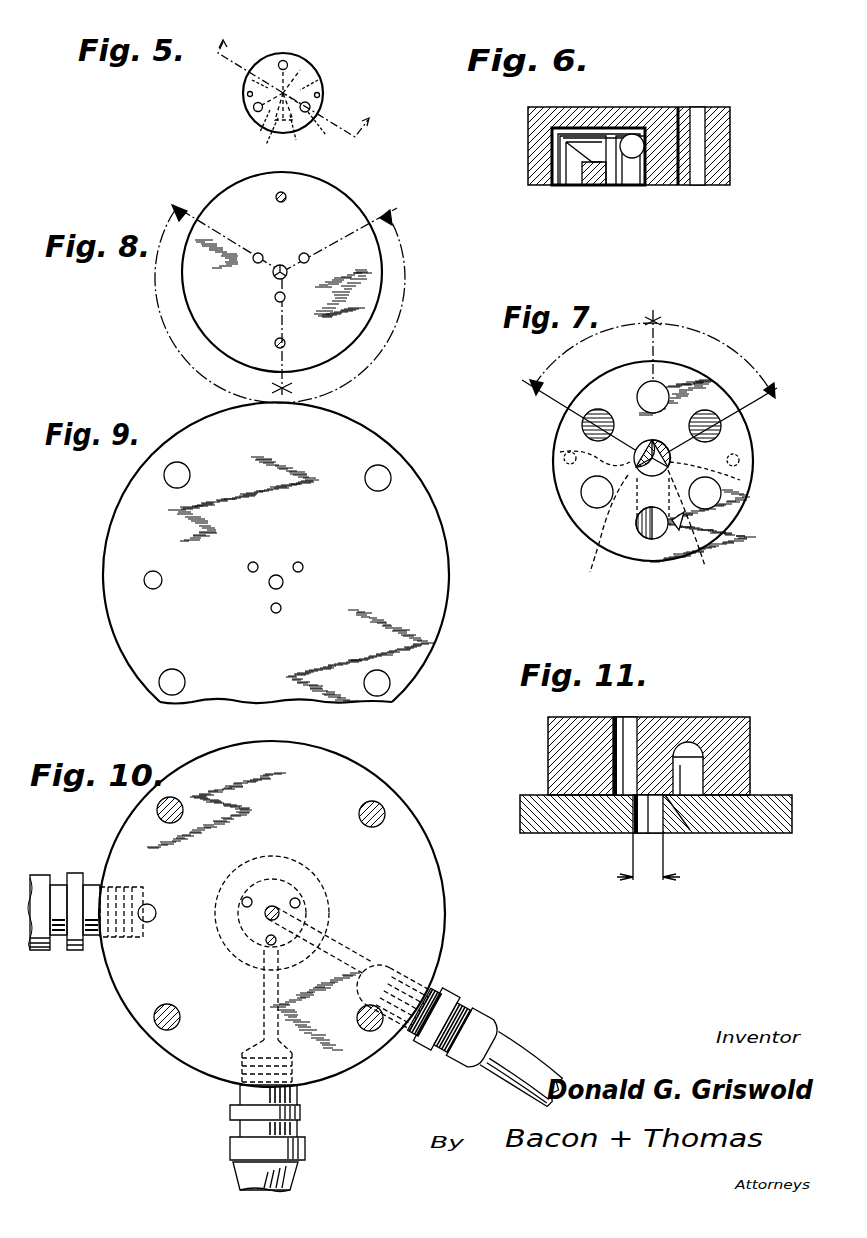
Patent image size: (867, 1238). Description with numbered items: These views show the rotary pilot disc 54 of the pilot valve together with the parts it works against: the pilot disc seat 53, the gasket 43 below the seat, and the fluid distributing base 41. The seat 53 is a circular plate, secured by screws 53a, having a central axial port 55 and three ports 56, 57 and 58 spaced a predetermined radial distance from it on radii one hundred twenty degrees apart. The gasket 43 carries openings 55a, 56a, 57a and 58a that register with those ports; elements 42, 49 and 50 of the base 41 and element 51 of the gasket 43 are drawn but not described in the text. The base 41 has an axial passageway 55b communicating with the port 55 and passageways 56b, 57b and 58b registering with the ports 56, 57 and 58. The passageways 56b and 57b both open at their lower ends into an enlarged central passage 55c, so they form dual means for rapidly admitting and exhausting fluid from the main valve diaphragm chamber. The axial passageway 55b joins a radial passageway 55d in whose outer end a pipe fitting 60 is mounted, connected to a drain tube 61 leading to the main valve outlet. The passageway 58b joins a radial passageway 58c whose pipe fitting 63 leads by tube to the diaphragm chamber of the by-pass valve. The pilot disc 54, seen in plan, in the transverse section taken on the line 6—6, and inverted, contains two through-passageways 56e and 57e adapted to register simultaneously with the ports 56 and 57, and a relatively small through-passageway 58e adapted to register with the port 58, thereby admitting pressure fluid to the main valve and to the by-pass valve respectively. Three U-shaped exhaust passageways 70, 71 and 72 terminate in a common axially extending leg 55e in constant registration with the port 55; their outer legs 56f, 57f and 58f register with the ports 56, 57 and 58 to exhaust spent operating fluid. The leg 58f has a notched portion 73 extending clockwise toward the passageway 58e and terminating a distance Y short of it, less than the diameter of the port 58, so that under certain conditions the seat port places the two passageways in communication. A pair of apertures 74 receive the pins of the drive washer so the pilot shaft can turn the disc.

In FIG. 5, the line 6— 6 is at (298, 79).
In FIG. 10, the base member 41 is at (424, 880).
In FIG. 10, the bolt holes 42 is at (384, 804).
In FIG. 9, the gasket 43 is at (430, 532).
In FIG. 10, the pipe fitting 49 is at (76, 873).
In FIG. 10, the passage 50 is at (151, 905).
In FIG. 9, the hole 51 is at (153, 571).
In FIG. 8, the pilot disc seat 53 is at (348, 208).
In FIG. 11, the pilot disc seat 53 is at (778, 833).
In FIG. 8, the screws 53a is at (287, 197).
In FIG. 5, the pilot disc 54 is at (306, 57).
In FIG. 6, the pilot disc 54 is at (528, 130).
In FIG. 7, the pilot disc 54 is at (720, 540).
In FIG. 11, the pilot disc 54 is at (548, 745).
In FIG. 8, the central port 55 is at (274, 278).
In FIG. 9, the gasket opening 55a is at (269, 585).
In FIG. 10, the axial passageway 55b is at (265, 917).
In FIG. 10, the enlarged central passage 55c is at (282, 880).
In FIG. 10, the radial passageway 55d is at (363, 958).
In FIG. 5, the common axial leg portion 55e is at (251, 126).
In FIG. 6, the common axial leg portion 55e is at (630, 180).
In FIG. 7, the common axial leg portion 55e is at (740, 480).
In FIG. 8, the port 56 is at (259, 253).
In FIG. 9, the gasket opening 56a is at (255, 562).
In FIG. 10, the passageway 56b is at (247, 896).
In FIG. 5, the pressure through-passageway 56e is at (287, 60).
In FIG. 7, the pressure through-passageway 56e is at (660, 385).
In FIG. 5, the outer leg portion 56f is at (252, 80).
In FIG. 6, the outer leg portion 56f is at (566, 185).
In FIG. 7, the outer leg portion 56f is at (715, 430).
In FIG. 8, the port 57 is at (306, 253).
In FIG. 9, the gasket opening 57a is at (300, 562).
In FIG. 10, the passageway 57b is at (300, 900).
In FIG. 5, the pressure through-passageway 57e is at (311, 107).
In FIG. 6, the pressure through-passageway 57e is at (698, 114).
In FIG. 7, the pressure through-passageway 57e is at (592, 498).
In FIG. 5, the outer leg portion 57f is at (318, 80).
In FIG. 6, the outer leg portion 57f is at (668, 183).
In FIG. 7, the outer leg portion 57f is at (590, 428).
In FIG. 8, the port 58 is at (286, 298).
In FIG. 11, the port 58 is at (641, 838).
In FIG. 9, the gasket opening 58a is at (282, 608).
In FIG. 10, the passageway 58b is at (278, 942).
In FIG. 10, the radial passageway 58c is at (262, 1020).
In FIG. 5, the small pressure through-passageway 58e is at (254, 108).
In FIG. 7, the small pressure through-passageway 58e is at (712, 496).
In FIG. 11, the small pressure through-passageway 58e is at (625, 730).
In FIG. 5, the outer leg 58f is at (296, 135).
In FIG. 7, the outer leg 58f is at (652, 540).
In FIG. 11, the outer leg 58f is at (696, 782).
In FIG. 10, the pipe fitting 60 is at (453, 986).
In FIG. 10, the drain tube 61 is at (546, 1072).
In FIG. 10, the pipe fitting 63 is at (232, 1112).
In FIG. 5, the U-shaped exhaust passageway 70 is at (272, 70).
In FIG. 6, the U-shaped exhaust passageway 70 is at (604, 118).
In FIG. 7, the U-shaped exhaust passageway 70 is at (740, 452).
In FIG. 5, the U-shaped exhaust passageway 71 is at (305, 73).
In FIG. 6, the U-shaped exhaust passageway 71 is at (638, 133).
In FIG. 7, the U-shaped exhaust passageway 71 is at (560, 452).
In FIG. 5, the U-shaped exhaust passageway 72 is at (322, 130).
In FIG. 7, the U-shaped exhaust passageway 72 is at (604, 529).
In FIG. 11, the U-shaped exhaust passageway 72 is at (703, 748).
In FIG. 5, the notched portion 73 is at (267, 138).
In FIG. 7, the notched portion 73 is at (692, 526).
In FIG. 11, the notched portion 73 is at (690, 833).
In FIG. 5, the apertures 74 is at (247, 94).
In FIG. 7, the apertures 74 is at (566, 464).